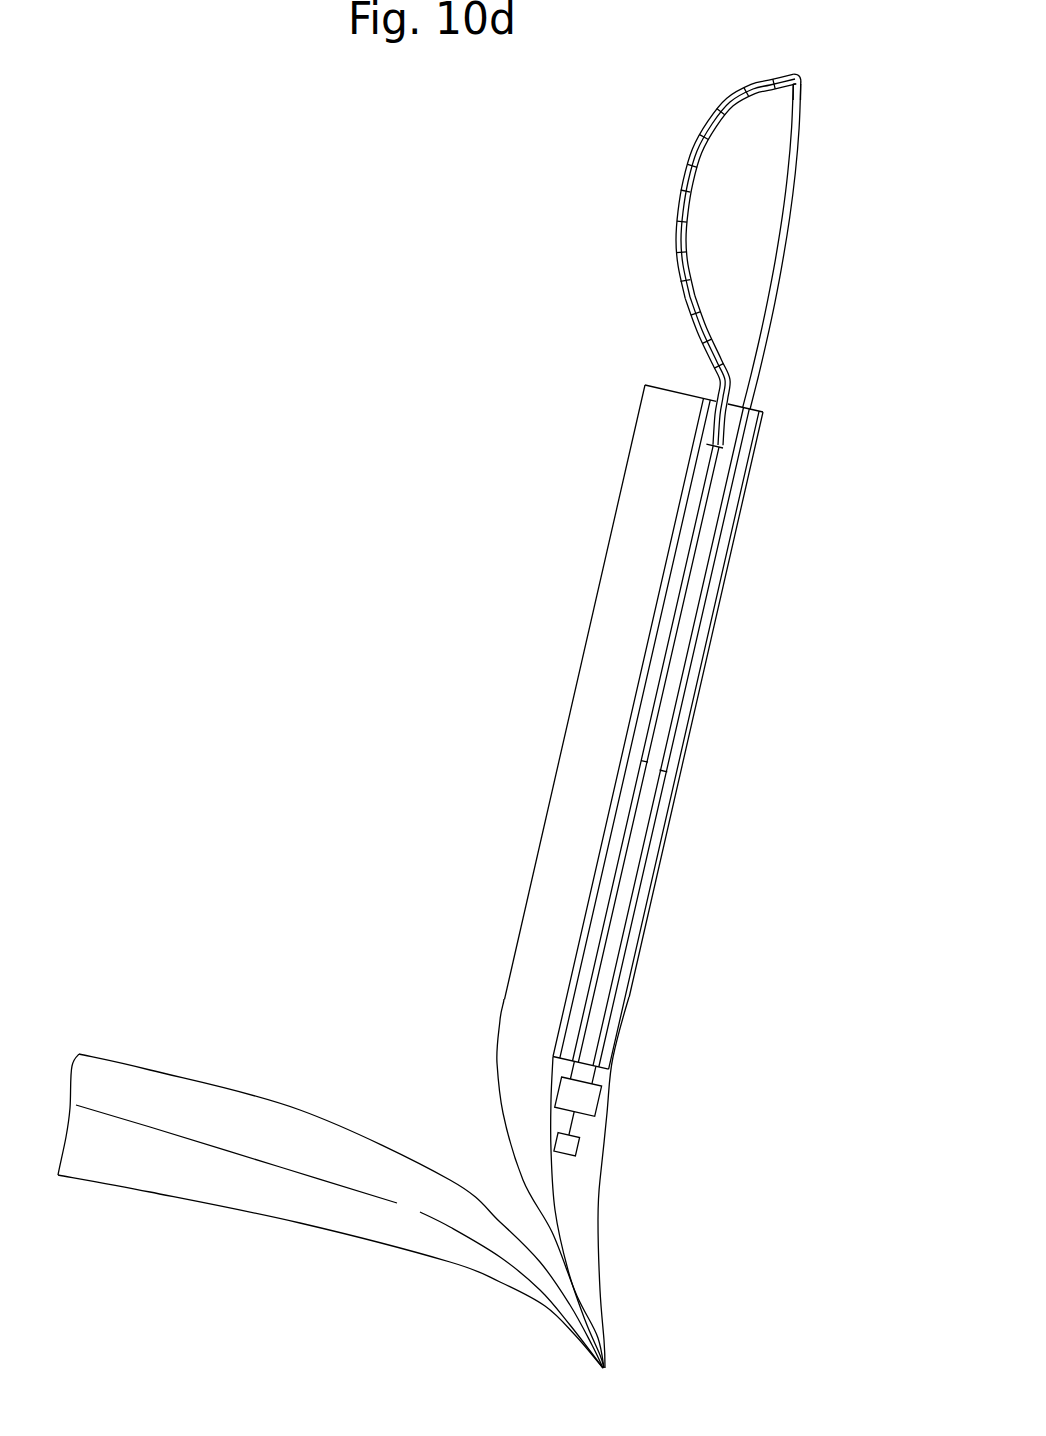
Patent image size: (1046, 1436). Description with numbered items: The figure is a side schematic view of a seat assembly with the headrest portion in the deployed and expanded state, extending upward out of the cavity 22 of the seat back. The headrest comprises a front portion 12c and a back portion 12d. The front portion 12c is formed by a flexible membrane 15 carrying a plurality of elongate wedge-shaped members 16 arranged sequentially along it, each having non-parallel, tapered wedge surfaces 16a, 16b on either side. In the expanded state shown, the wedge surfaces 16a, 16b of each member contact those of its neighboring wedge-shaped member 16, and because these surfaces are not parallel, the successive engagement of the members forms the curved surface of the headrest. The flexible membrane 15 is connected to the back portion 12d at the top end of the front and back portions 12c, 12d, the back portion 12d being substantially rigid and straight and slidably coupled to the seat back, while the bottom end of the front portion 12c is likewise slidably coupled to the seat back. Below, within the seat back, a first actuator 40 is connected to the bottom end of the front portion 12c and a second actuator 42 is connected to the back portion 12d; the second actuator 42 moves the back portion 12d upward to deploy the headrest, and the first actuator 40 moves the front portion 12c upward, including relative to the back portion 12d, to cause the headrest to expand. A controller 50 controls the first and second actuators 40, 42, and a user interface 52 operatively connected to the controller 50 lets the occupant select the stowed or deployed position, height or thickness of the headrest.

The front portion 12c is at (700, 340).
The back portion 12d is at (772, 300).
The flexible membrane 15 is at (680, 219).
The elongate wedge-shaped members 16 is at (752, 84).
The wedge surface 16a is at (761, 83).
The wedge surface 16b is at (733, 98).
The cavity 22 is at (688, 613).
The first actuator 40 is at (633, 806).
The second actuator 42 is at (648, 833).
The controller 50 is at (588, 1098).
The user interface 52 is at (568, 1143).